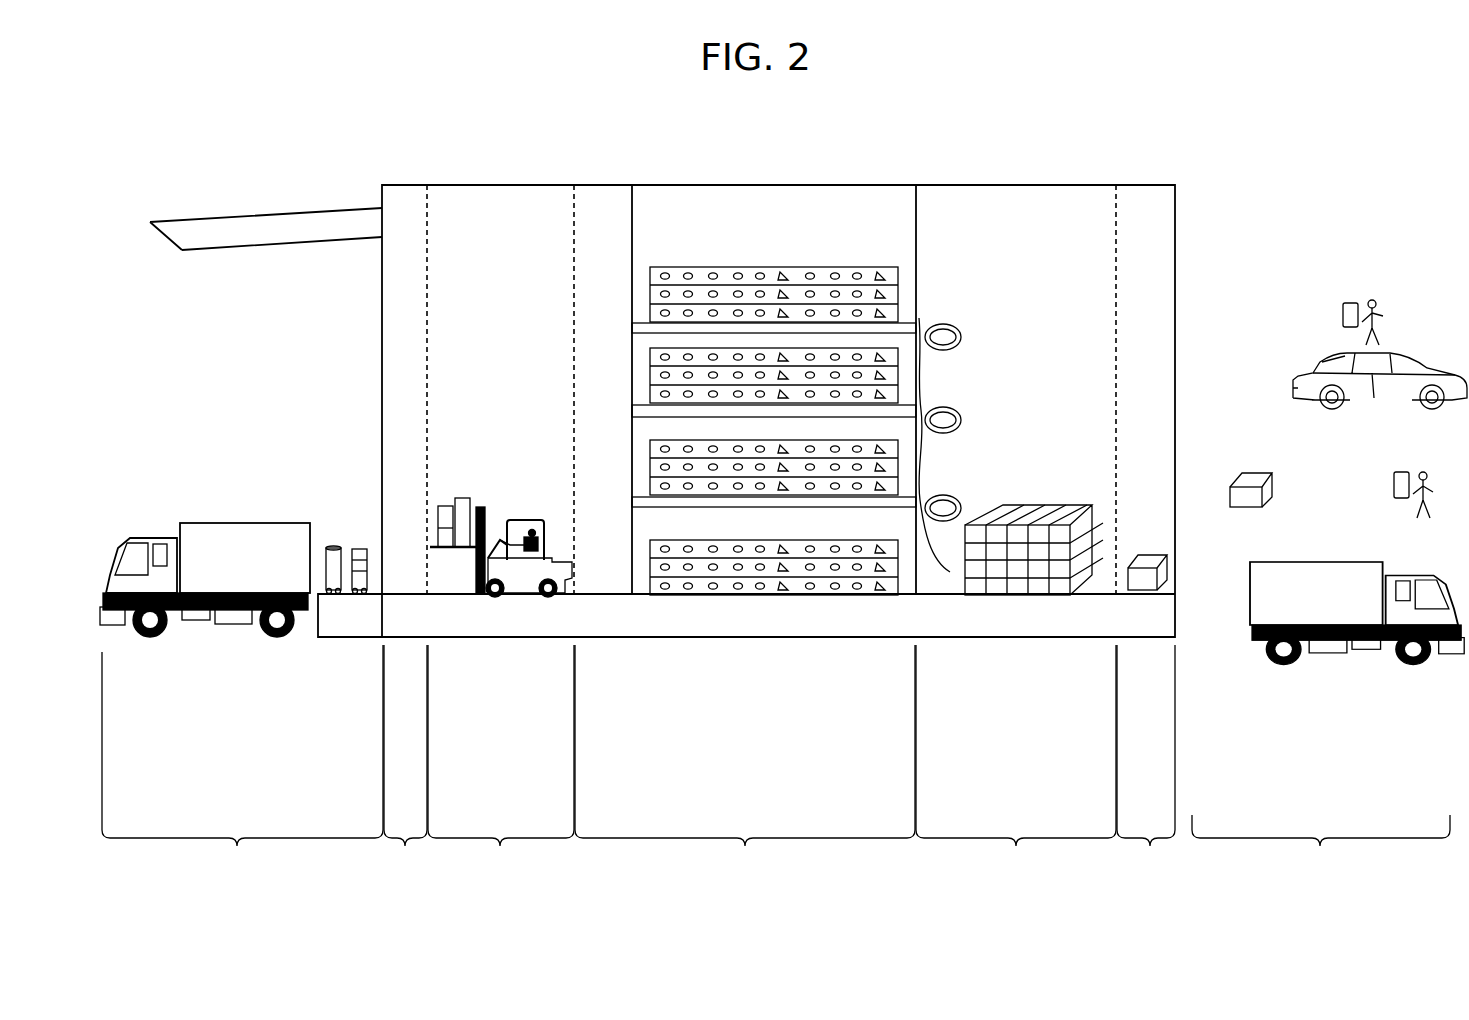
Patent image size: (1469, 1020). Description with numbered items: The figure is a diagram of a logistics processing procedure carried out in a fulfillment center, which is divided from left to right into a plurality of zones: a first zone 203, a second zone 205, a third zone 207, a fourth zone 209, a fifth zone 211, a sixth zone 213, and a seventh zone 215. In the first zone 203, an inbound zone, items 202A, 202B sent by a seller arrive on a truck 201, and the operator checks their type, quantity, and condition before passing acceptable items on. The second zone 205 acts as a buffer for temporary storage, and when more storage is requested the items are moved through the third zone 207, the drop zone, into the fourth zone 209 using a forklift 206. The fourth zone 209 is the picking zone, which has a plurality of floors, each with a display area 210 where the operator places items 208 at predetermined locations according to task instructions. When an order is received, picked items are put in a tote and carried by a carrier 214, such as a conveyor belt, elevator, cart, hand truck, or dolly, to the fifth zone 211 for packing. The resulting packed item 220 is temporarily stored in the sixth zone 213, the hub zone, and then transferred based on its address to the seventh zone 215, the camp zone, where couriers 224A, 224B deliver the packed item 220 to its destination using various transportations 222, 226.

The truck 201 is at (233, 521).
The item 202A is at (332, 544).
The item 202B is at (363, 547).
The first zone 203 is at (237, 847).
The second zone 205 is at (405, 847).
The forklift 206 is at (533, 519).
The third zone 207 is at (500, 847).
The items 208 is at (740, 272).
The fourth zone 209 is at (745, 847).
The display area 210 is at (774, 403).
The fifth zone 211 is at (1016, 847).
The sixth zone 213 is at (1150, 847).
The carrier 214 is at (948, 322).
The seventh zone 215 is at (1320, 847).
The packed item 220 is at (1252, 473).
The transportation 222 is at (1320, 562).
The courier 224A is at (1423, 517).
The courier 224B is at (1383, 314).
The transportation 226 is at (1393, 352).